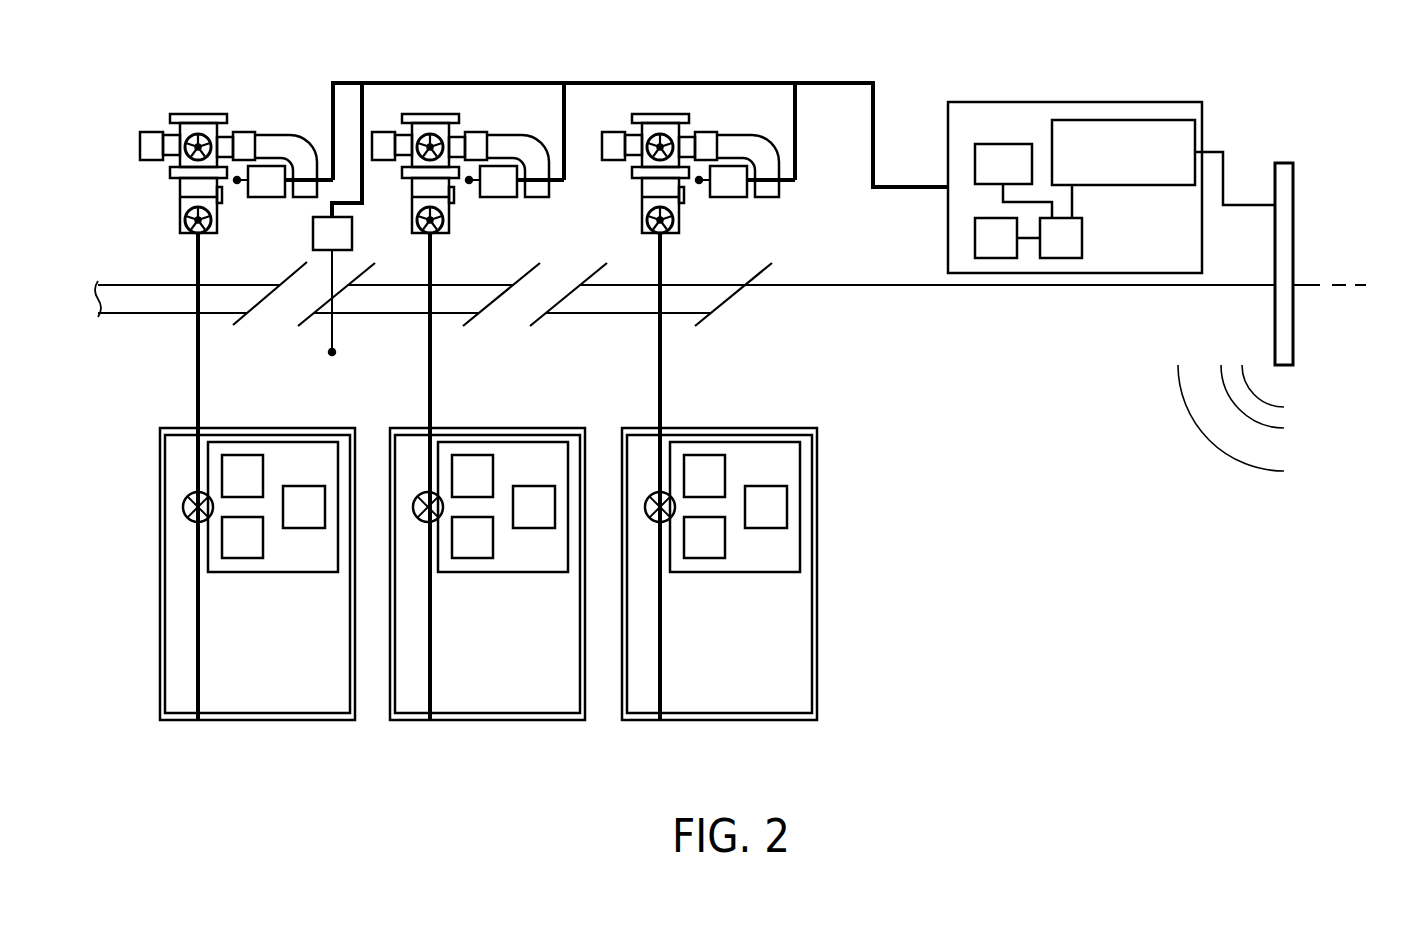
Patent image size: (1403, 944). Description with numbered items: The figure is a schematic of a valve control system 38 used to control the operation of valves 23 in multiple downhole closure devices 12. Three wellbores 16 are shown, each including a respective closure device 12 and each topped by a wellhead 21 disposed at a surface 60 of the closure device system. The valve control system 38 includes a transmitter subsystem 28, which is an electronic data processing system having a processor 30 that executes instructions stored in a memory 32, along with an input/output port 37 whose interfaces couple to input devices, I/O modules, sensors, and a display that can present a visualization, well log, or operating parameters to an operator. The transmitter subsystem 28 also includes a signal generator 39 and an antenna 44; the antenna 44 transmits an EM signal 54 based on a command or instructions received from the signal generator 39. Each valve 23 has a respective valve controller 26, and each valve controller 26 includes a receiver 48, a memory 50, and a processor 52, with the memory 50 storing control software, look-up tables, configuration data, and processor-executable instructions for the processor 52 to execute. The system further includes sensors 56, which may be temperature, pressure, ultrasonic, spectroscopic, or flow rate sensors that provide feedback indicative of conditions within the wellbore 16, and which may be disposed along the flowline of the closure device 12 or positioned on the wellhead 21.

The closure device 12 is at (177, 428).
The wellbore 16 is at (243, 285).
The wellhead 21 is at (200, 114).
The valve 23 is at (183, 505).
The valve controller 26 is at (290, 442).
The transmitter subsystem 28 is at (1043, 102).
The processor 30 is at (1082, 238).
The memory 32 is at (975, 238).
The input/output (I/O) port 37 is at (1003, 144).
The valve control system 38 is at (1375, 215).
The signal generator 39 is at (1120, 120).
The antenna 44 is at (1293, 262).
The receiver 48 is at (303, 528).
The memory 50 is at (243, 455).
The processor 52 is at (242, 558).
The EM signal 54 is at (1210, 440).
The sensor 56 is at (267, 197).
The surface 60 is at (851, 273).